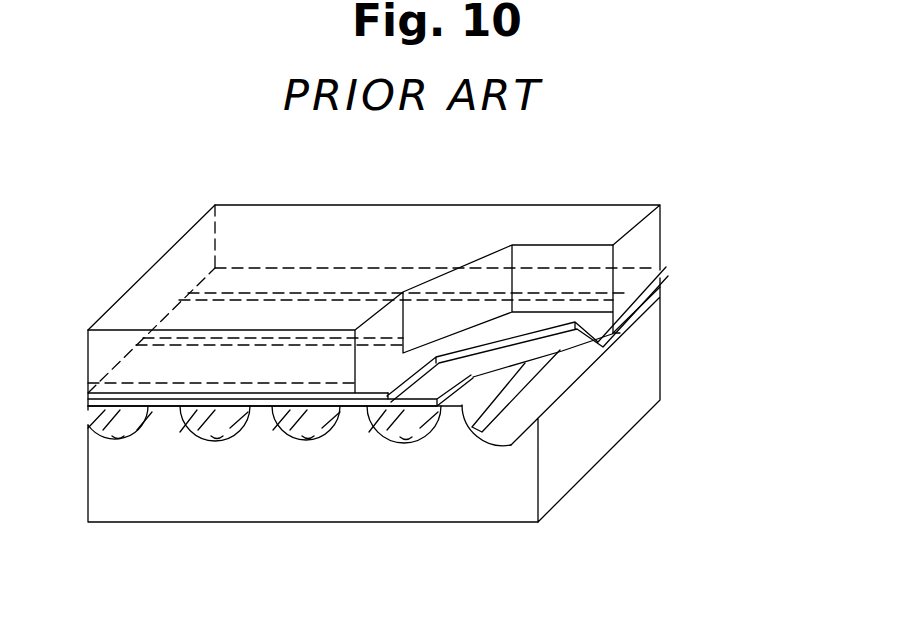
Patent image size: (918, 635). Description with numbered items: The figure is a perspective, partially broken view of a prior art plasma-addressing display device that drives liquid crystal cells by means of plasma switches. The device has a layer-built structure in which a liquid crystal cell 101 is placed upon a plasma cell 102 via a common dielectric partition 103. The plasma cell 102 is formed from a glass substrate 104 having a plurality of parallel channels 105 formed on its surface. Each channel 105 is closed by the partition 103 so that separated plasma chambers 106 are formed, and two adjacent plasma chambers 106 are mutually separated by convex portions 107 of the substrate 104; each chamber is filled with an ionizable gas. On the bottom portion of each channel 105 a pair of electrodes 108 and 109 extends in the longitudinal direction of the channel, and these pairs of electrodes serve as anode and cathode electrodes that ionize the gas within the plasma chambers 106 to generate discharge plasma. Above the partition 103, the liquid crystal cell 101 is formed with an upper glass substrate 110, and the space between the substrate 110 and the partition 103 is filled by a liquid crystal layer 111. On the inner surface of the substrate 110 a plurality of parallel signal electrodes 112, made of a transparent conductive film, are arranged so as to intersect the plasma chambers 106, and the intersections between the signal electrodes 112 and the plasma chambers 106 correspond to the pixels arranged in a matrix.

The liquid crystal cell 101 is at (668, 203).
The upper glass substrate 110 is at (643, 235).
The liquid crystal layer 111 is at (653, 270).
The common dielectric partition 103 is at (657, 285).
The plasma cell 102 is at (663, 338).
The glass substrate 104 is at (625, 407).
The channels 105 is at (440, 548).
The plasma chambers 106 is at (125, 432).
The convex portions 107 is at (353, 418).
The electrode 108 is at (190, 432).
The electrode 109 is at (243, 432).
The signal electrodes 112 is at (140, 350).